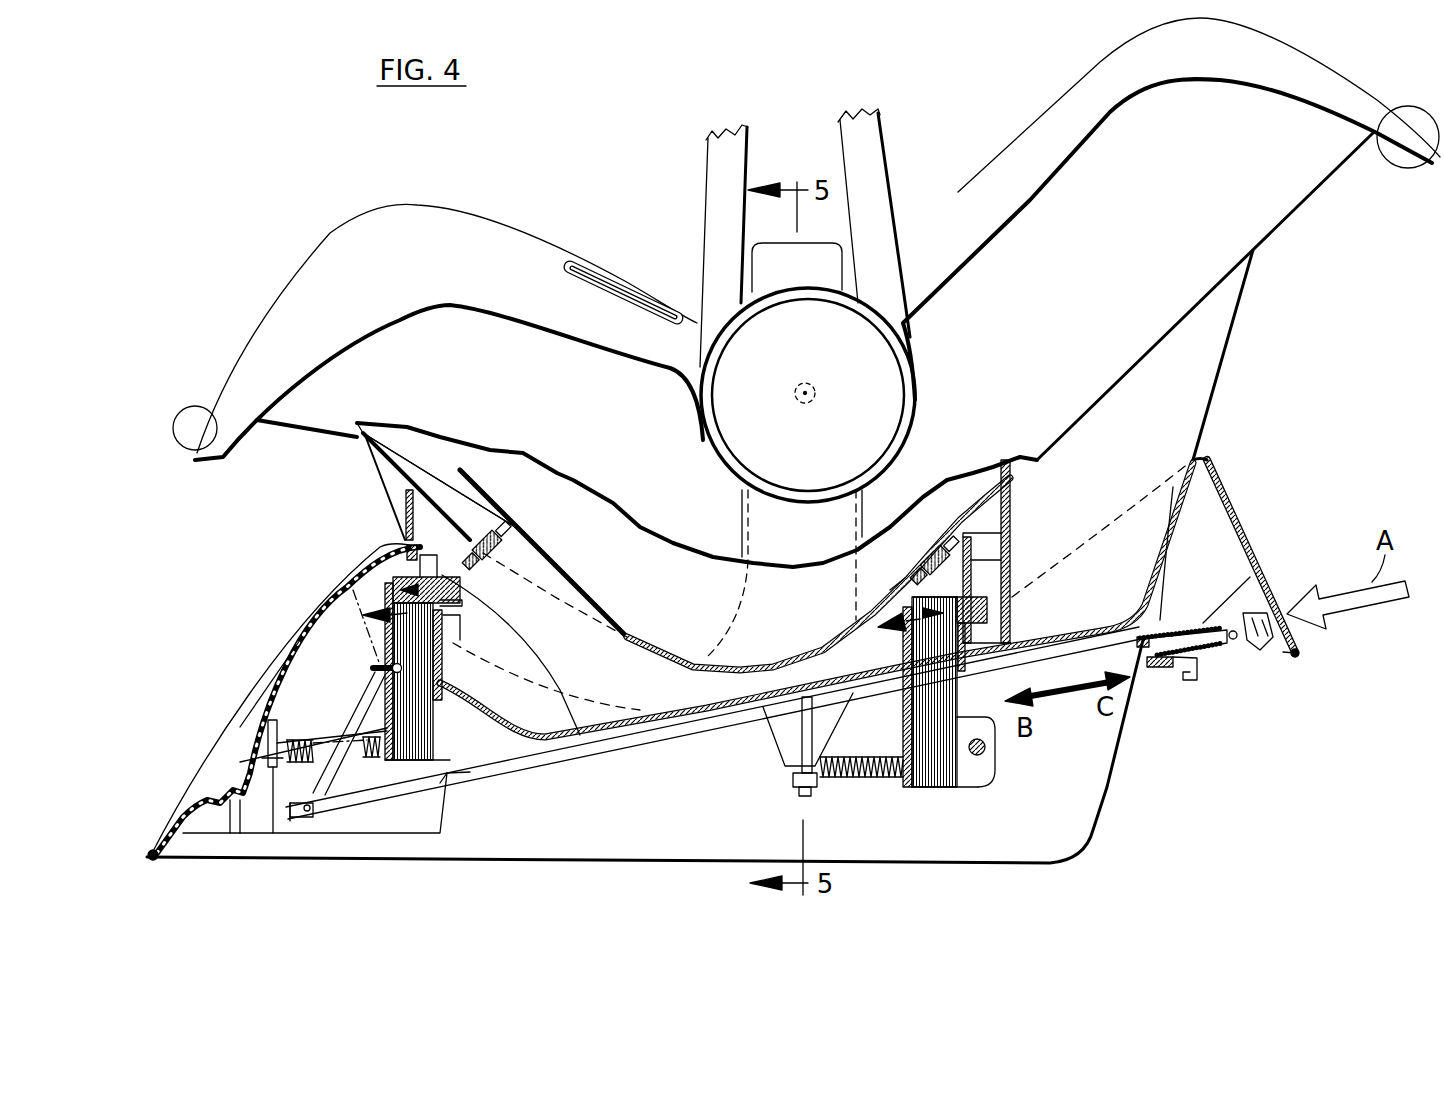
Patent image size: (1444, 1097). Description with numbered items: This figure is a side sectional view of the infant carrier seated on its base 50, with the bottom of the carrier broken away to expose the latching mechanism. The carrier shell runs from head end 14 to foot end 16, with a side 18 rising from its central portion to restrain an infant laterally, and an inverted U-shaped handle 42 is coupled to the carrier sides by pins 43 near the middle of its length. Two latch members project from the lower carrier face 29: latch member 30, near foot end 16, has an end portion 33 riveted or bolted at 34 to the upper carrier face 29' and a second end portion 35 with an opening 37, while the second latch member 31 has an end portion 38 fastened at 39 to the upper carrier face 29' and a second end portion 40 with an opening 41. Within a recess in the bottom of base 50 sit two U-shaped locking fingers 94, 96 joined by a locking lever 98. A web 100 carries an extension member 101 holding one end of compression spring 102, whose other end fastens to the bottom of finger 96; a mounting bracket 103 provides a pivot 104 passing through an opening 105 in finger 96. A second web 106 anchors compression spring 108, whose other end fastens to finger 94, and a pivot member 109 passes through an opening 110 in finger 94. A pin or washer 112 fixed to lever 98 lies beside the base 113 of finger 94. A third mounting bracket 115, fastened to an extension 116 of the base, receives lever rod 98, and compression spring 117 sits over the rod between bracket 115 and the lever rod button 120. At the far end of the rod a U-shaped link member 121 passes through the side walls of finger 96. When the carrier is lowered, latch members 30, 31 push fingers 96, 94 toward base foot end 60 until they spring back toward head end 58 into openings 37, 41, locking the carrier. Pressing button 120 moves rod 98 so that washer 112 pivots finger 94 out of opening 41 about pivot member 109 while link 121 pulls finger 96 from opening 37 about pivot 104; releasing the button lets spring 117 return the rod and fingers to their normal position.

The head end 14 is at (1378, 97).
The foot end 16 is at (176, 420).
The side 18 is at (548, 408).
The lower carrier face 29 is at (735, 570).
The upper carrier face 29' is at (469, 481).
The latch member 30 is at (493, 520).
The second latch member 31 is at (1012, 505).
The end portion 33 is at (498, 482).
The rivet or bolt 34 is at (477, 535).
The second end portion 35 is at (462, 640).
The opening 37 is at (460, 580).
The end portion 38 is at (872, 596).
The rivet or bolt 39 is at (925, 548).
The second end portion 40 is at (972, 550).
The opening 41 is at (975, 582).
The handle 42 is at (887, 160).
The pin 43 is at (815, 380).
The infant carrier base 50 is at (1082, 780).
The head end 58 is at (1302, 652).
The foot end 60 is at (158, 850).
The locking finger 94 is at (950, 790).
The locking finger 96 is at (467, 610).
The locking lever 98 is at (1057, 665).
The web 100 is at (297, 670).
The extension member 101 is at (268, 732).
The compression spring 102 is at (300, 740).
The mounting bracket 103 is at (520, 733).
The pivot 104 is at (462, 713).
The opening 105 is at (445, 785).
The second web 106 is at (785, 742).
The compression spring 108 is at (812, 795).
The pivot member 109 is at (993, 780).
The opening 110 is at (990, 746).
The pin or washer 112 is at (895, 782).
The base of finger 113 is at (910, 643).
The third mounting bracket 115 is at (1197, 682).
The extension 116 is at (1160, 630).
The compression spring 117 is at (1250, 577).
The lever rod button 120 is at (1257, 652).
The U-shaped link member 121 is at (367, 690).